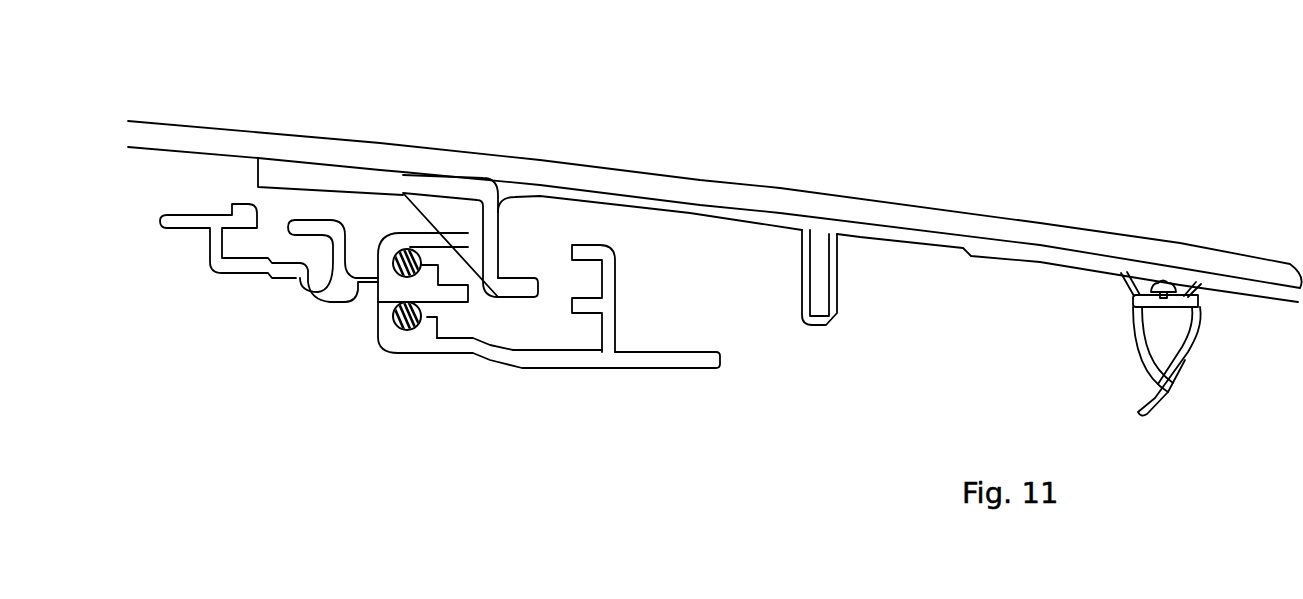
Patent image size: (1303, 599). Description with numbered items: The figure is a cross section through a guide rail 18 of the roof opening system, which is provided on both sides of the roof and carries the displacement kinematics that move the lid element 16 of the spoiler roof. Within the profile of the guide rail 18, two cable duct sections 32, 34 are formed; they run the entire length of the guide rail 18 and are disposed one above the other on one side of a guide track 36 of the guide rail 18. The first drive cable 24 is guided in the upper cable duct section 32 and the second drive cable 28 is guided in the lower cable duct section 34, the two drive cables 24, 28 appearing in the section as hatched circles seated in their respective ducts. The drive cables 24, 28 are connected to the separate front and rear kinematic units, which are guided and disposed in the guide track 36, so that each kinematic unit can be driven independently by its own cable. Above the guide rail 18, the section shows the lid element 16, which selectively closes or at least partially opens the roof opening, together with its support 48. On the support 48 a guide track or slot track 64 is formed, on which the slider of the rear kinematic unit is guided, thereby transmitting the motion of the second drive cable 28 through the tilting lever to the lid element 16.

The lid element 16 is at (617, 182).
The guide rail 18 is at (528, 368).
The drive cable 24 is at (400, 270).
The drive cable 28 is at (407, 323).
The cable duct section 32 is at (400, 267).
The cable duct section 34 is at (403, 320).
The guide track 36 is at (563, 337).
The support 48 is at (492, 232).
The slot track 64 is at (518, 278).